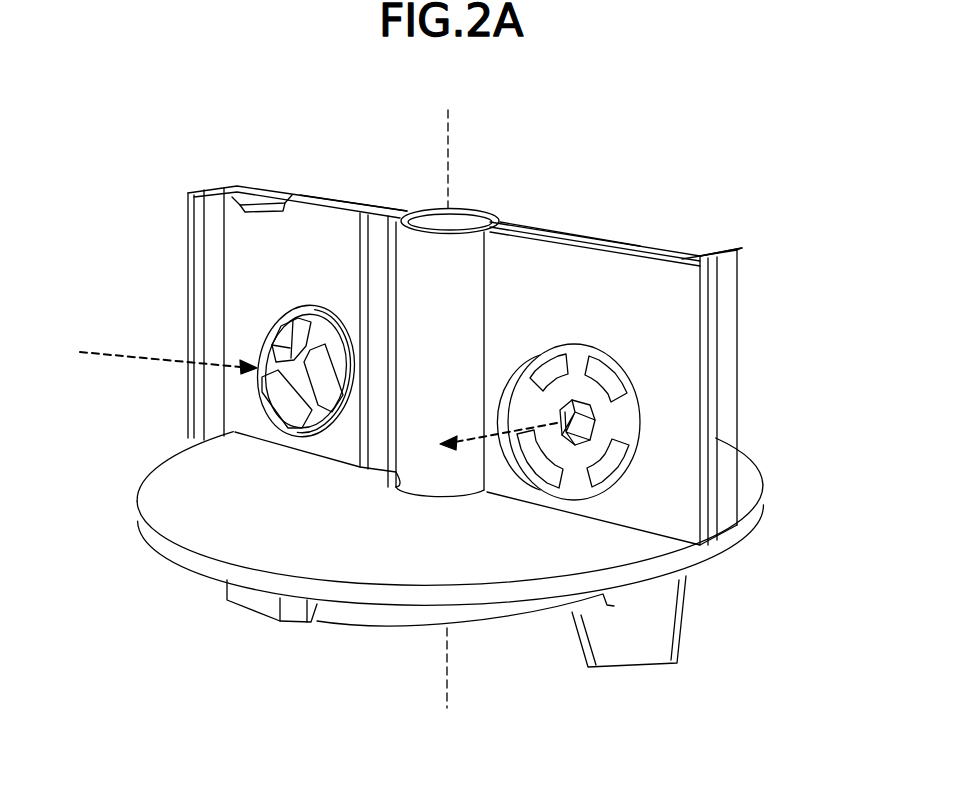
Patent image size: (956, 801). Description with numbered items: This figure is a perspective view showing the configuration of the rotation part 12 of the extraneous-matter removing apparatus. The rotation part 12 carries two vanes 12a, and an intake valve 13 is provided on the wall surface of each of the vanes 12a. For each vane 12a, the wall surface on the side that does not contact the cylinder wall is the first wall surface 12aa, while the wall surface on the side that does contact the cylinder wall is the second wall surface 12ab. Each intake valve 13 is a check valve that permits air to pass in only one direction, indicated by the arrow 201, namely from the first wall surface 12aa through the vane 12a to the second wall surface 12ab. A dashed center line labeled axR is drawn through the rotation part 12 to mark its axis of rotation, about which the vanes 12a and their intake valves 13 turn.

The rotation part 12 is at (718, 128).
The vane 12a is at (355, 131).
The first wall surface 12aa is at (259, 216).
The second wall surface 12ab is at (306, 197).
The intake valve 13 is at (268, 313).
The arrow 201 is at (108, 354).
The rotation axis axR is at (444, 398).